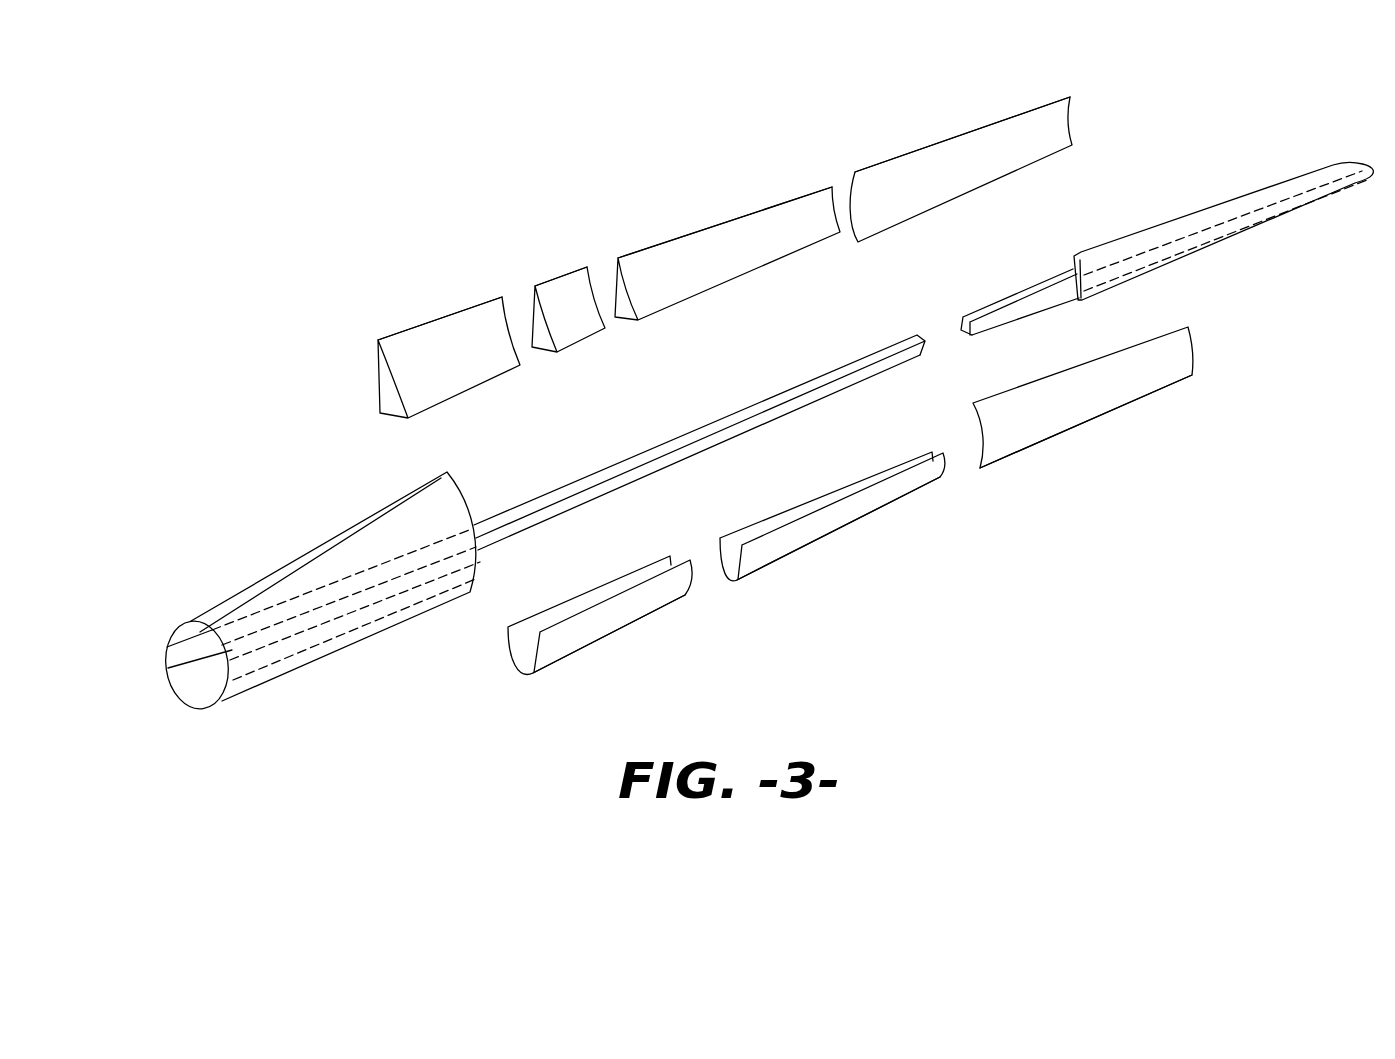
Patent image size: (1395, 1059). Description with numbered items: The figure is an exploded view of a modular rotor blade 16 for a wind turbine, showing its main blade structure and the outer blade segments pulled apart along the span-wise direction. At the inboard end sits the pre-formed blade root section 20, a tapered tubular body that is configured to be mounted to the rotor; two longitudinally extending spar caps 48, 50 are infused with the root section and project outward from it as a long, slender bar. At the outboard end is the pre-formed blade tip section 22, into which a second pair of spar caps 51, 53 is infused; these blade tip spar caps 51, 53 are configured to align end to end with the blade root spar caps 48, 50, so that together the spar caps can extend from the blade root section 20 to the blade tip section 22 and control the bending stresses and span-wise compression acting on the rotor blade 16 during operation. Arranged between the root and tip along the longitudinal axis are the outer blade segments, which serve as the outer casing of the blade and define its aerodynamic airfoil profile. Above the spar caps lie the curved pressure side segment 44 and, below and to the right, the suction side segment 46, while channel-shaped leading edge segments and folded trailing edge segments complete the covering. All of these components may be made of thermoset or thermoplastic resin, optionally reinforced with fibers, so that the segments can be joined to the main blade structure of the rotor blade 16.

The rotor blade 16 is at (1130, 112).
The blade root section 20 is at (320, 589).
The blade tip section 22 is at (1230, 238).
The pressure side segment 44 is at (957, 137).
The suction side segment 46 is at (1090, 423).
The blade root spar cap 48 is at (699, 440).
The blade root spar cap 50 is at (687, 450).
The blade tip spar cap 51 is at (1019, 301).
The blade tip spar cap 53 is at (1012, 321).